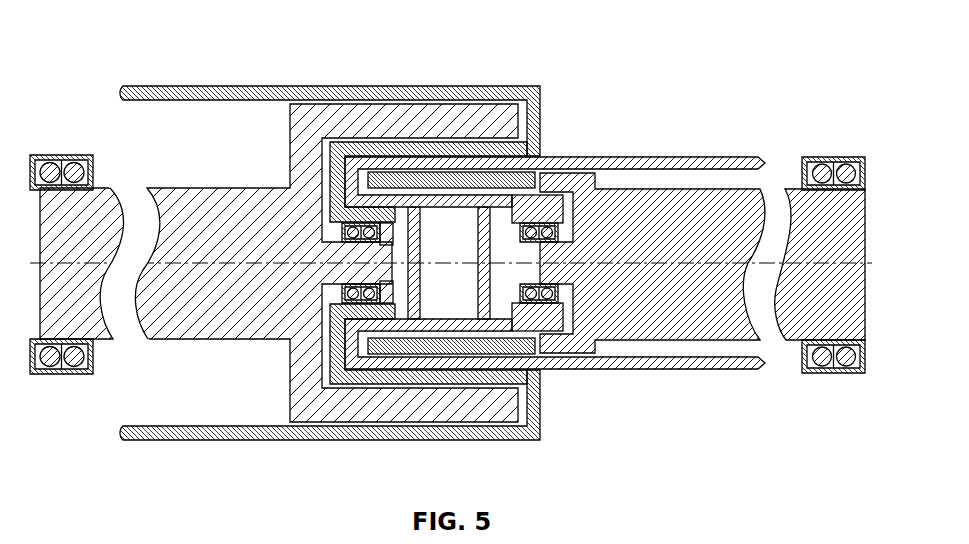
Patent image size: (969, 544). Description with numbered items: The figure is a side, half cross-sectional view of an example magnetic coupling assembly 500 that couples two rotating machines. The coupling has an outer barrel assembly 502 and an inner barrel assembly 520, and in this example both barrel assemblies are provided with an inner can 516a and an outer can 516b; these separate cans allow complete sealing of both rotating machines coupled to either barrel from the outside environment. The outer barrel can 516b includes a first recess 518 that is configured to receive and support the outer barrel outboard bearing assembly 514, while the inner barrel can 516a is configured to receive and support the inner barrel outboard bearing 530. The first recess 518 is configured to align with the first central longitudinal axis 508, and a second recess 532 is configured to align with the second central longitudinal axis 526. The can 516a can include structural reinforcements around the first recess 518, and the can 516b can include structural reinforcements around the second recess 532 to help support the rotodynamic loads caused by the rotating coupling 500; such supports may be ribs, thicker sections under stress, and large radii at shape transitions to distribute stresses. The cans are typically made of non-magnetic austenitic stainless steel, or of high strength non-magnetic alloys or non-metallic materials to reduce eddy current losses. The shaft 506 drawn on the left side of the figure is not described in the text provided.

The magnetic coupling assembly 500 is at (119, 35).
The outer barrel assembly 502 is at (246, 416).
The first shaft 506 is at (196, 330).
The first central longitudinal axis 508 is at (228, 263).
The outer barrel outboard bearing assembly 514 is at (358, 304).
The inner can 516a is at (473, 321).
The outer can 516b is at (410, 378).
The first recess 518 is at (396, 228).
The inner barrel assembly 520 is at (643, 399).
The second central longitudinal axis 526 is at (818, 262).
The inner barrel outboard bearing 530 is at (545, 229).
The second recess 532 is at (502, 297).